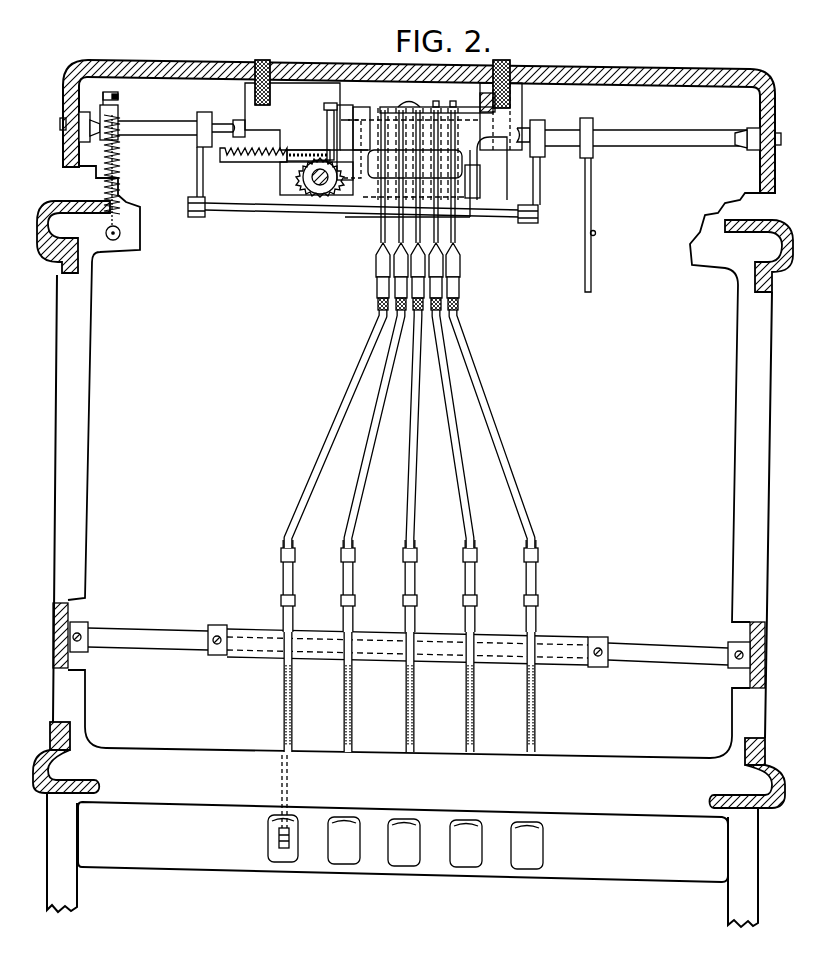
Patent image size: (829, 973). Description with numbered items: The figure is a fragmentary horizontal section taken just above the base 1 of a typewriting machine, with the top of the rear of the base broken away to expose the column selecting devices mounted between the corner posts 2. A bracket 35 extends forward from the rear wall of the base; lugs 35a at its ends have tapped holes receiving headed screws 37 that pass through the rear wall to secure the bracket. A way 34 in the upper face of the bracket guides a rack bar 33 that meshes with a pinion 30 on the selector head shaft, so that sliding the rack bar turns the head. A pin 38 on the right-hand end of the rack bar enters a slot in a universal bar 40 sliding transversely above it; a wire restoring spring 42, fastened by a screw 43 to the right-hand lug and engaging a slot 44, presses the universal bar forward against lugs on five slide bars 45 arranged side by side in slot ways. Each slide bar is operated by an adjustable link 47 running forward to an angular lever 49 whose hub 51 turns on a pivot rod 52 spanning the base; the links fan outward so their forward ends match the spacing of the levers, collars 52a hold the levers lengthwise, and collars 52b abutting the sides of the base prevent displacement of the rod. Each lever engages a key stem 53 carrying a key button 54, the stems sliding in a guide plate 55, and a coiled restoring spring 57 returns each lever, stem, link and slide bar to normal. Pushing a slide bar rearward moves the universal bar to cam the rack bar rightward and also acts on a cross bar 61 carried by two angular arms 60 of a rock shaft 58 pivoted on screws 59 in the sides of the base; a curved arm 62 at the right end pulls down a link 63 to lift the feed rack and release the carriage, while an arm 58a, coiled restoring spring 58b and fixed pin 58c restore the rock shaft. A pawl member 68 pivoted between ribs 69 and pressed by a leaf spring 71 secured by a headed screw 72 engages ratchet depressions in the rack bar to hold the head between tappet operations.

The base 1 is at (190, 78).
The corner posts 2 is at (87, 213).
The pinion 30 is at (303, 181).
The rack bar 33 is at (487, 187).
The way or track 34 is at (478, 160).
The support or bracket 35 is at (297, 117).
The lugs or ears 35a is at (546, 110).
The headed screws 37 is at (272, 95).
The pin or lug 38 is at (357, 158).
The universal bar 40 is at (373, 117).
The wire restoring spring 42 is at (450, 110).
The screw 43 is at (490, 97).
The slot 44 is at (412, 110).
The slide bars 45 is at (400, 226).
The adjustable link 47 is at (375, 422).
The angular lever 49 is at (350, 693).
The hub 51 is at (302, 631).
The pivot rod 52 is at (148, 638).
The collars 52a is at (218, 627).
The collars 52b is at (84, 626).
The key stem 53 is at (277, 838).
The key button 54 is at (330, 837).
The guide plate 55 is at (593, 872).
The coiled restoring spring 57 is at (350, 718).
The rock shaft 58 is at (138, 128).
The arm 58a is at (110, 96).
The coiled restoring spring 58b is at (123, 165).
The fixed pin 58c is at (113, 243).
The pivot screws 59 is at (92, 142).
The angular arms 60 is at (200, 178).
The cross rod or bar 61 is at (323, 207).
The curved arm 62 is at (592, 204).
The link 63 is at (600, 233).
The detent or pawl member 68 is at (342, 151).
The ribs 69 is at (290, 165).
The leaf spring 71 is at (336, 122).
The headed screw 72 is at (341, 80).